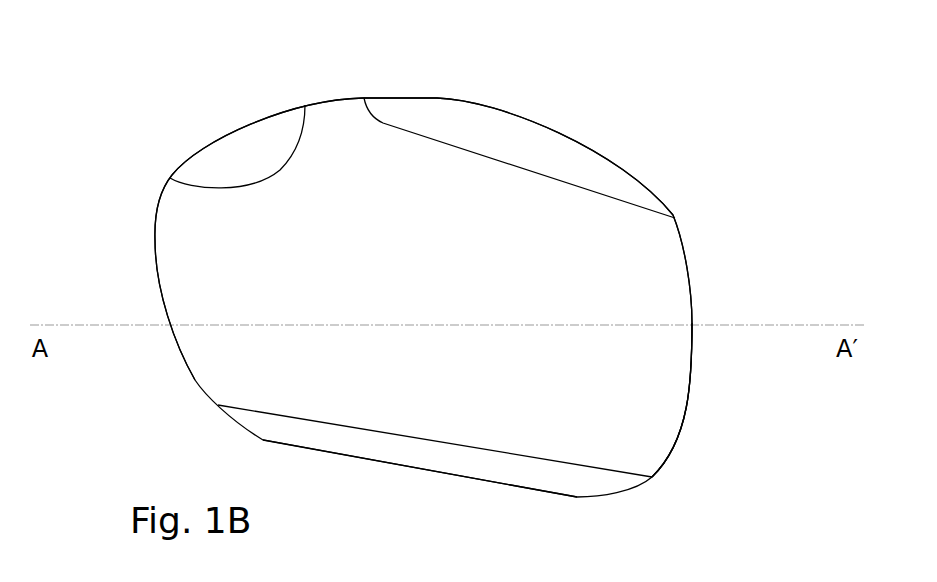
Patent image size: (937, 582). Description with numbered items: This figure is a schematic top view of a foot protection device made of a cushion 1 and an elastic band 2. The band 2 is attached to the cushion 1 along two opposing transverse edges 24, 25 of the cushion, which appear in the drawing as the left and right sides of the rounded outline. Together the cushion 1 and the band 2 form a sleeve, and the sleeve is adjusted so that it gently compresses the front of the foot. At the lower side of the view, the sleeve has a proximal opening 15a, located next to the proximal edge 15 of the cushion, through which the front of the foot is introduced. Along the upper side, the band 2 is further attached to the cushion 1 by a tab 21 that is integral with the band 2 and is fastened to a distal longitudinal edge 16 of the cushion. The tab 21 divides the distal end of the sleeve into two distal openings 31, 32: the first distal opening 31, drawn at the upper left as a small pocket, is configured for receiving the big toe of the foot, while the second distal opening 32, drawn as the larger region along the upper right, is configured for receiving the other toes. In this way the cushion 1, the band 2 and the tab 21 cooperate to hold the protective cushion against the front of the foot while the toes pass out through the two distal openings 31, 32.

The cushion 1 is at (577, 483).
The elastic band 2 is at (648, 458).
The proximal edge 15 is at (368, 463).
The proximal opening 15a is at (462, 474).
The distal longitudinal edge 16 is at (462, 98).
The tab 21 is at (333, 120).
The transverse edge 24 is at (155, 245).
The transverse edge 25 is at (690, 413).
The distal opening 31 is at (229, 130).
The distal opening 32 is at (532, 126).